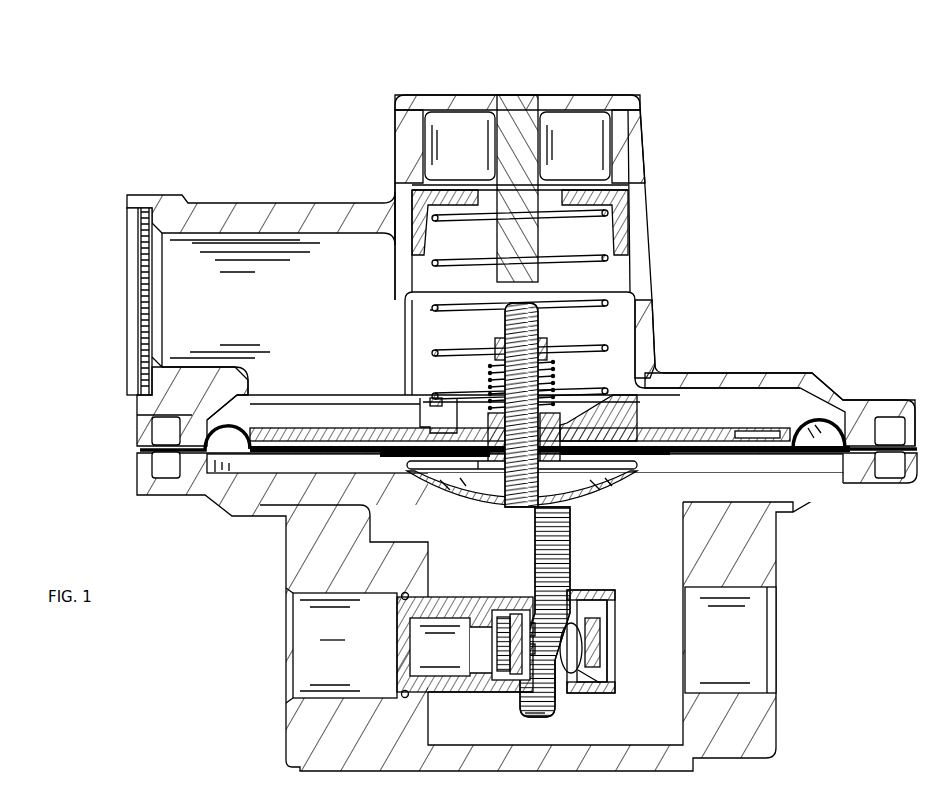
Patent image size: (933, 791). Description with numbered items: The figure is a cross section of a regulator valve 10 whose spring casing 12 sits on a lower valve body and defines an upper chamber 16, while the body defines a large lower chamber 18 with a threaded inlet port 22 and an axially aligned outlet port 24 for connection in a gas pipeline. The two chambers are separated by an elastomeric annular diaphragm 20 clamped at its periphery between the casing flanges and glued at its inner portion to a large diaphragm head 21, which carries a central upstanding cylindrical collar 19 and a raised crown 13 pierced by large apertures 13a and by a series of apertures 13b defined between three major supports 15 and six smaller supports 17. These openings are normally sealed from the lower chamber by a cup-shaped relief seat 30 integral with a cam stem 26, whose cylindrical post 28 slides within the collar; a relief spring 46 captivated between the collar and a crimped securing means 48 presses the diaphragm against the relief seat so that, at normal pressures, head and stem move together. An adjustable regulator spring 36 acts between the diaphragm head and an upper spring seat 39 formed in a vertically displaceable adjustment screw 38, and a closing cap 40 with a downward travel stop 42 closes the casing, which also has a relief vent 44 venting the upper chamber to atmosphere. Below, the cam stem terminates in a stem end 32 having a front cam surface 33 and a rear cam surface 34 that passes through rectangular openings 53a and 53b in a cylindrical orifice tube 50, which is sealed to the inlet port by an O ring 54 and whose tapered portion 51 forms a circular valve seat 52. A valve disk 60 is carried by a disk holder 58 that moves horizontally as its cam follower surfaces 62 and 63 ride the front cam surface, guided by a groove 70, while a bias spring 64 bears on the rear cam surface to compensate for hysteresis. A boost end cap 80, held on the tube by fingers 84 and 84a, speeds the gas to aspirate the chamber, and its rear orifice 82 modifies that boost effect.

The regulator valve 10 is at (517, 72).
The spring casing 12 is at (654, 265).
The raised crown 13 is at (563, 407).
The large apertures 13a is at (449, 394).
The apertures 13b is at (401, 410).
The major supports 15 is at (633, 411).
The upper chamber 16 is at (629, 328).
The smaller supports 17 is at (423, 403).
The lower chamber 18 is at (659, 529).
The cylindrical collar 19 is at (493, 466).
The diaphragm 20 is at (824, 417).
The diaphragm head 21 is at (729, 428).
The inlet port 22 is at (286, 645).
The outlet port 24 is at (776, 636).
The cam stem 26 is at (572, 534).
The cylindrical post 28 is at (541, 316).
The relief seat 30 is at (635, 480).
The stem end 32 is at (561, 699).
The front cam surface 33 is at (537, 730).
The rear cam surface 34 is at (612, 669).
The regulator spring 36 is at (593, 256).
The adjustment screw 38 is at (652, 184).
The upper spring seat 39 is at (642, 221).
The closing cap 40 is at (644, 101).
The travel stop 42 is at (491, 147).
The relief vent 44 is at (127, 283).
The relief spring 46 is at (551, 387).
The securing means 48 is at (496, 347).
The orifice tube 50 is at (463, 595).
The tapered portion 51 is at (397, 657).
The valve seat 52 is at (468, 639).
The rectangular opening 53a is at (514, 604).
The rectangular opening 53b is at (501, 700).
The O ring 54 is at (404, 593).
The disk holder 58 is at (504, 612).
The valve disk 60 is at (484, 686).
The cam follower surface 62 is at (541, 626).
The cam follower surface 63 is at (539, 646).
The bias spring 64 is at (571, 648).
The groove 70 is at (601, 645).
The boost end cap 80 is at (619, 597).
The orifice 82 is at (616, 631).
The finger 84 is at (587, 589).
The finger 84a is at (584, 694).